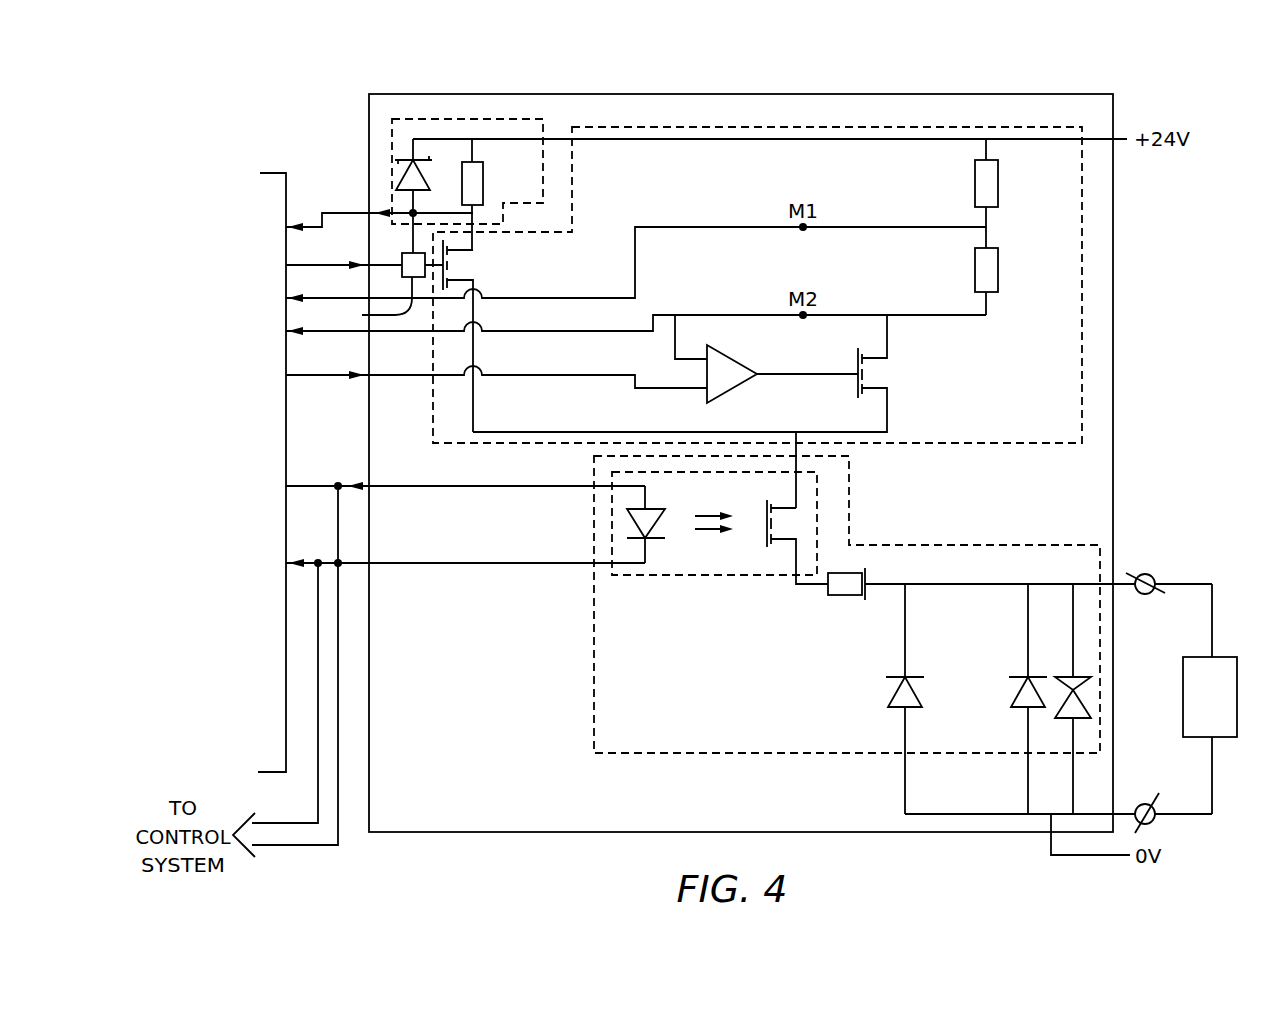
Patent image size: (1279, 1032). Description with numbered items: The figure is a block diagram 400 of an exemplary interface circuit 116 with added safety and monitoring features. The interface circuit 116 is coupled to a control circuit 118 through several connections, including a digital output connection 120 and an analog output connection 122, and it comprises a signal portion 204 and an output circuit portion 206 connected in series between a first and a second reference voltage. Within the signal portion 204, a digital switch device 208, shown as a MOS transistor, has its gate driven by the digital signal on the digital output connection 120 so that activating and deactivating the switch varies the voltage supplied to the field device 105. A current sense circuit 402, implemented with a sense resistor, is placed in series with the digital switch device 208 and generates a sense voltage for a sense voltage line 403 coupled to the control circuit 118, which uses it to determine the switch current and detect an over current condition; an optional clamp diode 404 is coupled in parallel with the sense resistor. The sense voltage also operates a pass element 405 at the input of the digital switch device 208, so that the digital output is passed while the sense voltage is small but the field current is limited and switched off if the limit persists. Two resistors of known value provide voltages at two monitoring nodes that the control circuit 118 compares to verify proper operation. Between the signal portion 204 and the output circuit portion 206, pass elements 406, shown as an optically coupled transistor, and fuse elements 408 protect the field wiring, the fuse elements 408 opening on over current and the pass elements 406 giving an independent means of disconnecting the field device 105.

The interface circuit 116 is at (1118, 380).
The control circuit 118 is at (273, 173).
The digital output connection 120 is at (364, 245).
The analog output connection 122 is at (496, 368).
The block diagram 400 is at (1237, 481).
The current sense circuit 402 is at (505, 119).
The sense voltage line 403 is at (349, 208).
The clamp diode 404 is at (405, 158).
The pass element 405 is at (365, 303).
The digital switch device 208 is at (478, 265).
The signal portion 204 is at (1090, 247).
The output circuit portion 206 is at (978, 545).
The pass elements 406 is at (685, 575).
The fuse elements 408 is at (848, 600).
The field device 105 is at (1210, 699).